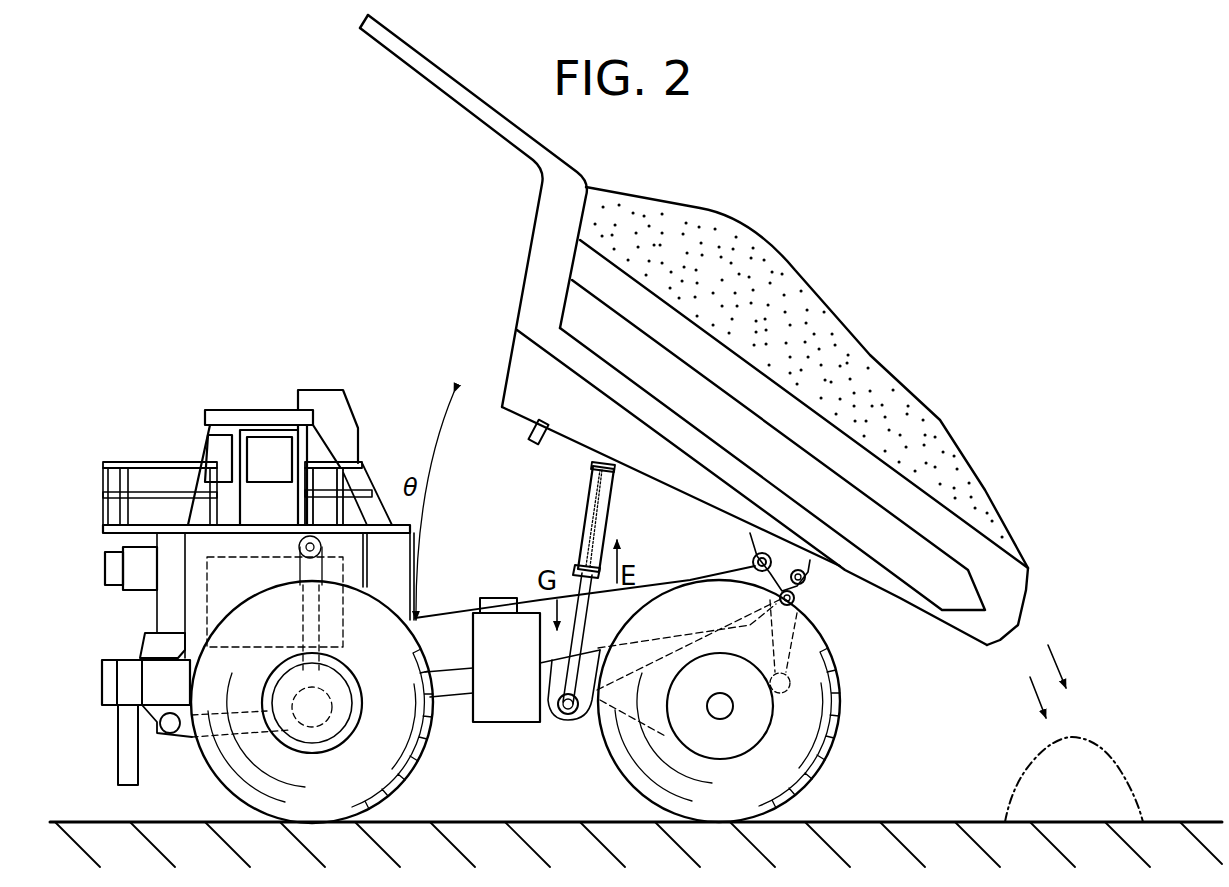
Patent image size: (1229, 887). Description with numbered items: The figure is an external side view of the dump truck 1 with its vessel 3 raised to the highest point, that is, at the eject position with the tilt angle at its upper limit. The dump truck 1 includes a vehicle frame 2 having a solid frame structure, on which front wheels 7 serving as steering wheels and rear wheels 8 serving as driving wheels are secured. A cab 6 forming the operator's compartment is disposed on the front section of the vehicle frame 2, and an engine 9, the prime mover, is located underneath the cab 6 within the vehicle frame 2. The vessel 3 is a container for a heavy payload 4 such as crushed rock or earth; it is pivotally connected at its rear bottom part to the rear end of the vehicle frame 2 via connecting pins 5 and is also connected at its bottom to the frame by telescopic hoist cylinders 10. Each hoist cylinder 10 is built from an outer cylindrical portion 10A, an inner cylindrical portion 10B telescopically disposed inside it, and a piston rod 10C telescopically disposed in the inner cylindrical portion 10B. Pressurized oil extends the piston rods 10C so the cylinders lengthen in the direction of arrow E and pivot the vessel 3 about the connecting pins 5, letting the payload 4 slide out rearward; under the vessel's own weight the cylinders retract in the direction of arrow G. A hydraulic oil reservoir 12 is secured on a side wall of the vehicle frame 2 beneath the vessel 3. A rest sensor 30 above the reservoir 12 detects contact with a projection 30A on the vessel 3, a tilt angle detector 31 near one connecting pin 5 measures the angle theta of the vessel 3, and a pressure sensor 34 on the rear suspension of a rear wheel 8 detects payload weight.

The dump truck 1 is at (291, 382).
The vehicle frame 2 is at (450, 663).
The vessel 3 is at (910, 507).
The payload 4 is at (782, 260).
The connecting pins 5 is at (755, 558).
The cab 6 is at (208, 430).
The front wheels 7 is at (222, 768).
The rear wheels 8 is at (835, 750).
The engine 9 is at (207, 600).
The hoist cylinder 10 is at (574, 521).
The outer cylindrical portion 10A is at (611, 511).
The inner cylindrical portion 10B is at (576, 580).
The piston rod 10C is at (566, 712).
The hydraulic oil reservoir 12 is at (497, 710).
The rest sensor 30 is at (487, 598).
The projection 30A is at (532, 437).
The tilt angle detector 31 is at (808, 580).
The pressure sensor 34 is at (797, 612).